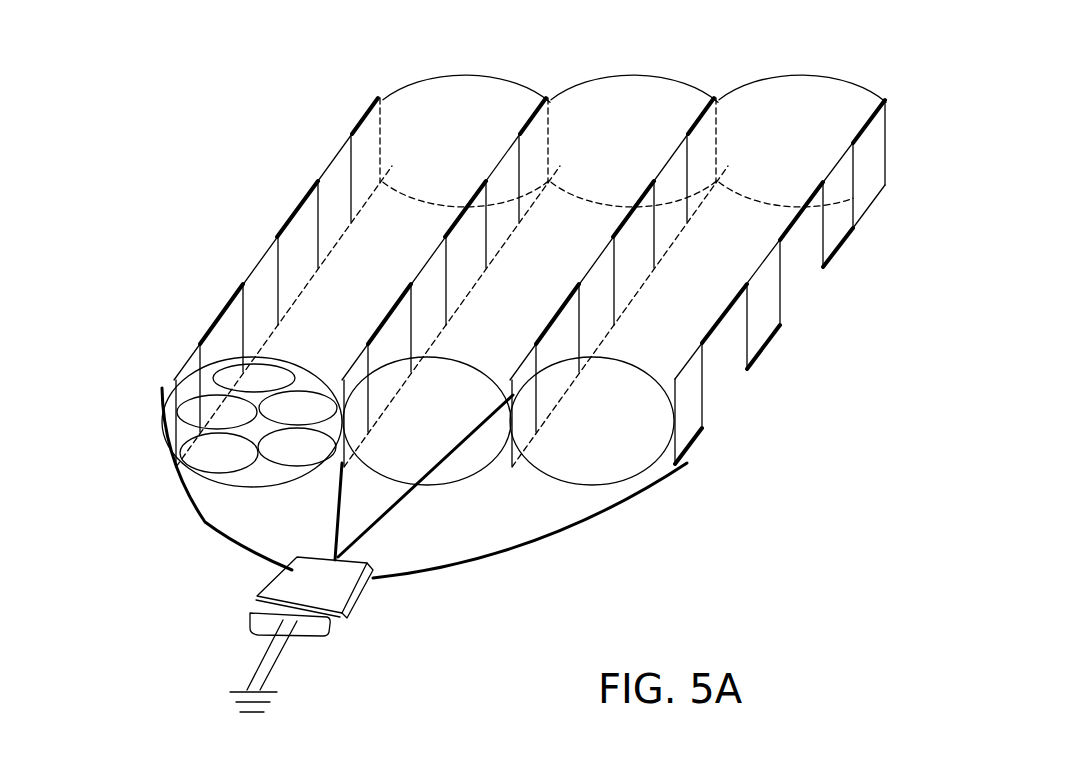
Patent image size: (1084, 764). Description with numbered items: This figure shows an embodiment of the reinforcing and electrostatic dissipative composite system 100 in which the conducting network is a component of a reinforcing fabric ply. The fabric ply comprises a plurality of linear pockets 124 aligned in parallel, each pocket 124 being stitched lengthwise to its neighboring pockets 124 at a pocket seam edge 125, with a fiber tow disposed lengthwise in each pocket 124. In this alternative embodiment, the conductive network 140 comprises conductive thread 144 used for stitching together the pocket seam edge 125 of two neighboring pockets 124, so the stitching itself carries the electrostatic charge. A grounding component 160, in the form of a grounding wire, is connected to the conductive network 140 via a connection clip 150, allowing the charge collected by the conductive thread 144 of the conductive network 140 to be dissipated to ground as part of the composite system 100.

The reinforcing and electrostatic dissipative (ESD) composite system 100 is at (205, 172).
The pocket 124 is at (467, 148).
The pocket seam edge 125 is at (365, 159).
The conductive thread 144 is at (448, 256).
The conductive network 140 is at (196, 527).
The connection clip 150 is at (376, 605).
The grounding component 160 is at (231, 663).